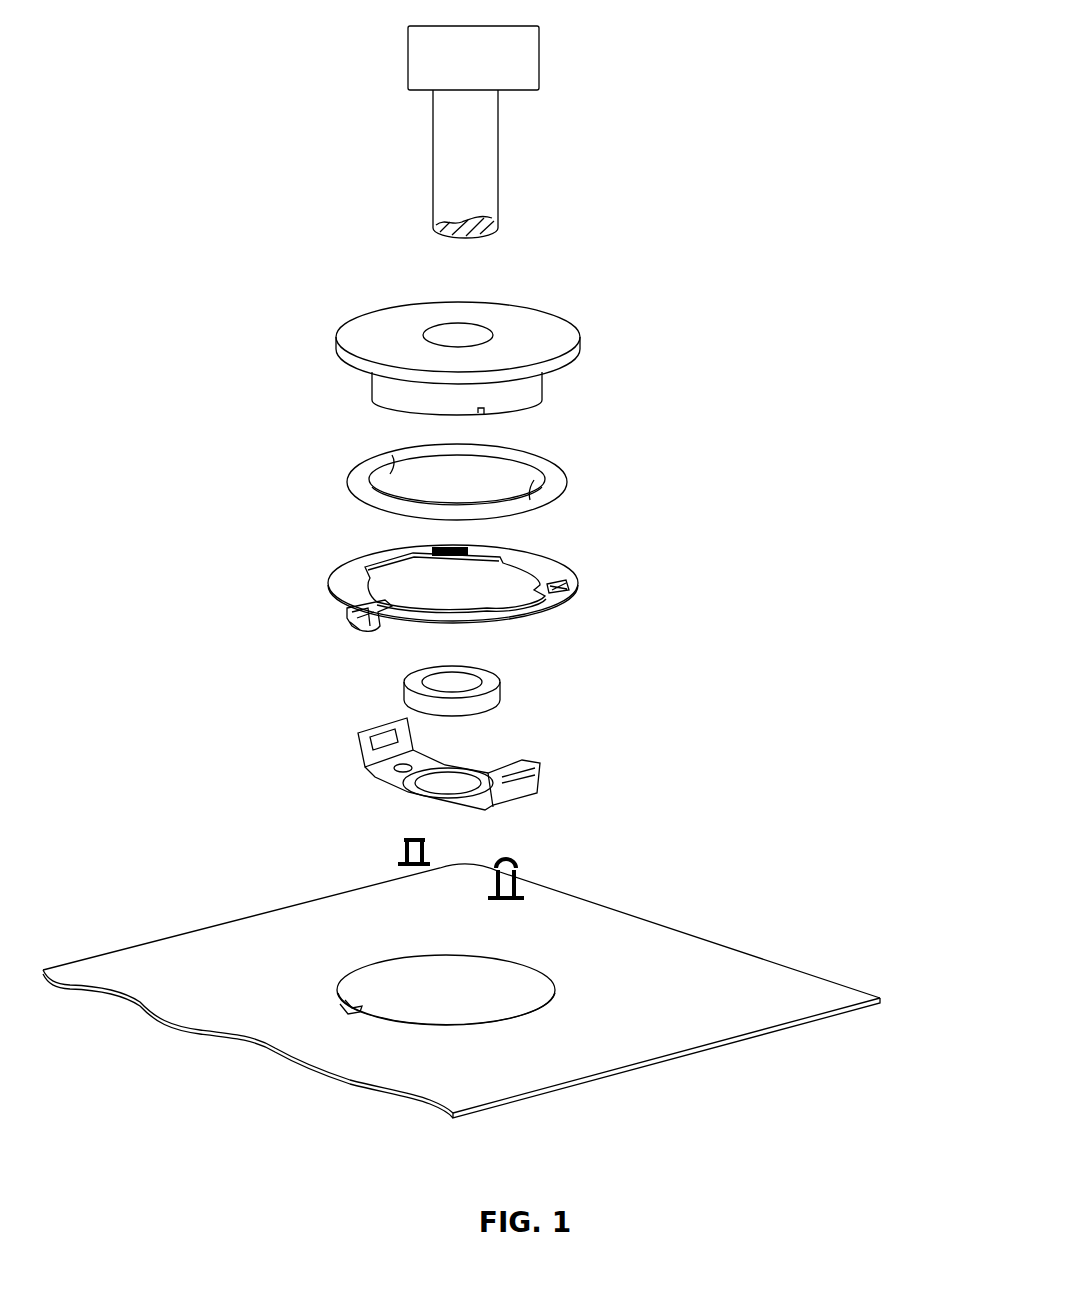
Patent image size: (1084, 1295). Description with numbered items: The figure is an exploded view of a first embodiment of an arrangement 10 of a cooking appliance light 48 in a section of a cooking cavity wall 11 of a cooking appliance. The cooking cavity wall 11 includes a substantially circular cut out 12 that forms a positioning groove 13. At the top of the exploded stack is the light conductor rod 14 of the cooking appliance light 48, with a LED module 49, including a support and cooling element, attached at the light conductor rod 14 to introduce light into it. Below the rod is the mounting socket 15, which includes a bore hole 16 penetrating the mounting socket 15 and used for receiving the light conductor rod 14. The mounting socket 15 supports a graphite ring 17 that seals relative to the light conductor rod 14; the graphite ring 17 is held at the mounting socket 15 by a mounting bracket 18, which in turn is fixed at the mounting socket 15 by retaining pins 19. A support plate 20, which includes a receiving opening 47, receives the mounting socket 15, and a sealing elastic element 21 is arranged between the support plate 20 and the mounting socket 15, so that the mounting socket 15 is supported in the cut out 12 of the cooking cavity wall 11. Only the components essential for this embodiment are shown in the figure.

The arrangement 10 is at (760, 192).
The cooking cavity wall 11 is at (461, 1006).
The cut out 12 is at (599, 1013).
The positioning groove 13 is at (367, 1007).
The light conductor rod 14 is at (517, 132).
The mounting socket 15 is at (544, 329).
The bore hole 16 is at (476, 328).
The graphite ring 17 is at (530, 684).
The mounting bracket 18 is at (573, 778).
The retaining pins 19 is at (395, 848).
The support plate 20 is at (545, 568).
The sealing elastic element 21 is at (582, 473).
The receiving opening 47 is at (459, 582).
The cooking appliance light 48 is at (417, 167).
The LED module 49 is at (393, 73).